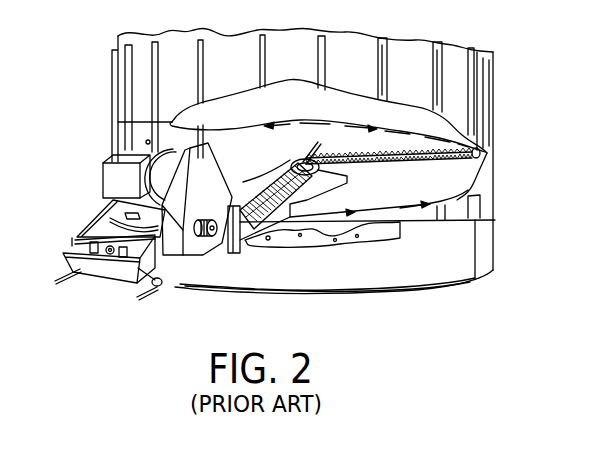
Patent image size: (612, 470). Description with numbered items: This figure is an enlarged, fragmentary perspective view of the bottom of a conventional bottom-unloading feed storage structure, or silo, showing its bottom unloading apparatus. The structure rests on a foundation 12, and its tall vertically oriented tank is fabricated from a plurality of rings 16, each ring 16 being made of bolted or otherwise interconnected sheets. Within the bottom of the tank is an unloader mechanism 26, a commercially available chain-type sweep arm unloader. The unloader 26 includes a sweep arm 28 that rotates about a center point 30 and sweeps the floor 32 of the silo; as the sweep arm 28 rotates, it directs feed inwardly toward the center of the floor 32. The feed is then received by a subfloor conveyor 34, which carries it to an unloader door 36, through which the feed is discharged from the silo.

The foundation 12 is at (487, 245).
The ring 16 is at (460, 52).
The unloader mechanism 26 is at (99, 157).
The sweep arm 28 is at (444, 126).
The center point 30 is at (317, 143).
The floor 32 is at (452, 176).
The subfloor conveyor 34 is at (285, 205).
The unloader door 36 is at (118, 277).